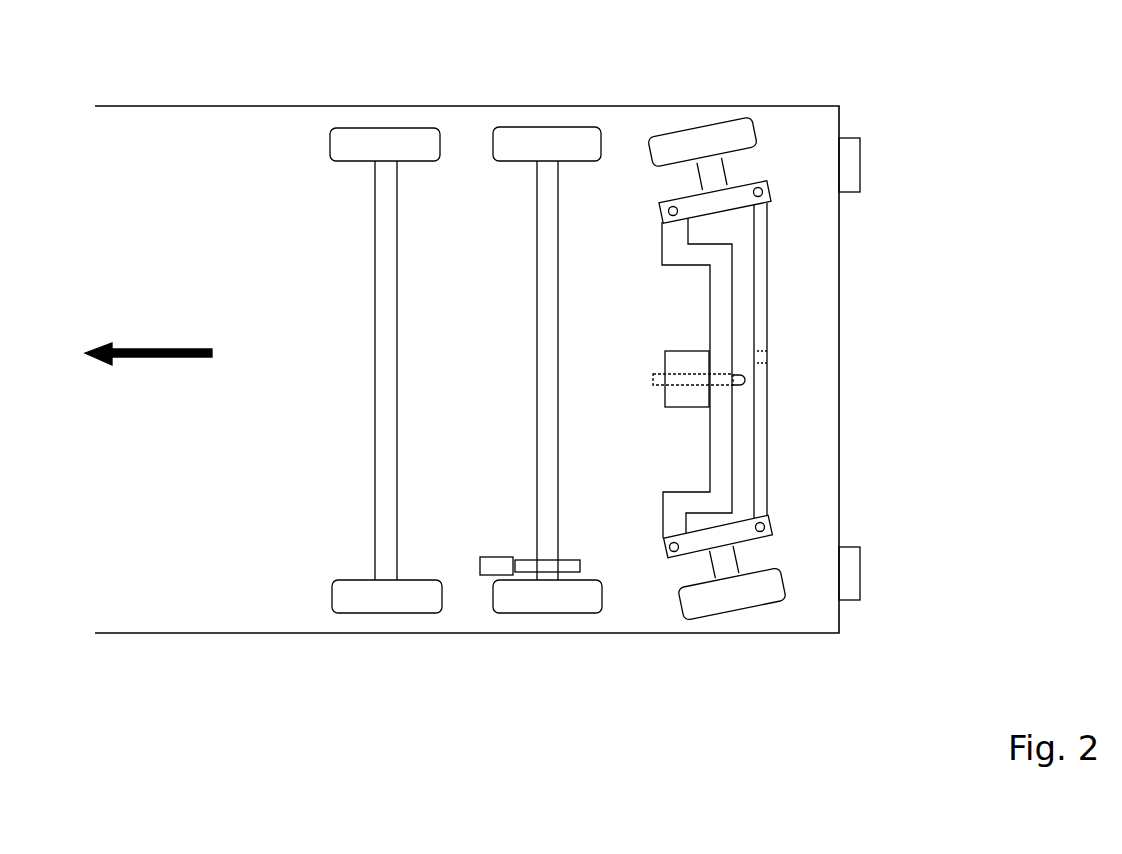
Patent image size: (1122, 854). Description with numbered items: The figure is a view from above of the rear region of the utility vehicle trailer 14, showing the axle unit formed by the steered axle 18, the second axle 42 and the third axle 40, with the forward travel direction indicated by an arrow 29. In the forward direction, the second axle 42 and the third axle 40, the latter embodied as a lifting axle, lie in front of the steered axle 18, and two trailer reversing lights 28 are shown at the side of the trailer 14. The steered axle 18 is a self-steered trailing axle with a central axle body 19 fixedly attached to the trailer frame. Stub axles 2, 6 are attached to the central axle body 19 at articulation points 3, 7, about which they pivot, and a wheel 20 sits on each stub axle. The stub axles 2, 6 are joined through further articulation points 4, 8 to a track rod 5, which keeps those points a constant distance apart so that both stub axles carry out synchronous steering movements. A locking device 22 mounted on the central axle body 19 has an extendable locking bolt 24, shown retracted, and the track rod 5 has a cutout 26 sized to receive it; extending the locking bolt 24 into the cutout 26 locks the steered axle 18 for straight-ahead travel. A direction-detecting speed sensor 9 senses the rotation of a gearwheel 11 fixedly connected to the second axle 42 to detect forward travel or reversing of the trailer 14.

The stub axle 2 is at (735, 562).
The articulation point 3 is at (663, 550).
The further articulation point 4 is at (768, 521).
The track rod 5 is at (765, 292).
The stub axle 6 is at (717, 177).
The articulation point 7 is at (662, 212).
The further articulation point 8 is at (766, 190).
The direction-detecting speed sensor 9 is at (489, 557).
The gearwheel 11 is at (566, 566).
The utility vehicle trailer 14 is at (466, 80).
The steered axle 18 is at (668, 432).
The central axle body 19 is at (718, 295).
The wheel 20 is at (715, 126).
The locking device 22 is at (672, 362).
The locking bolt 24 is at (743, 384).
The cutout 26 is at (757, 353).
The trailer reversing light 28 is at (860, 165).
The arrow 29 is at (155, 349).
The third axle 40 is at (383, 255).
The second axle 42 is at (545, 265).